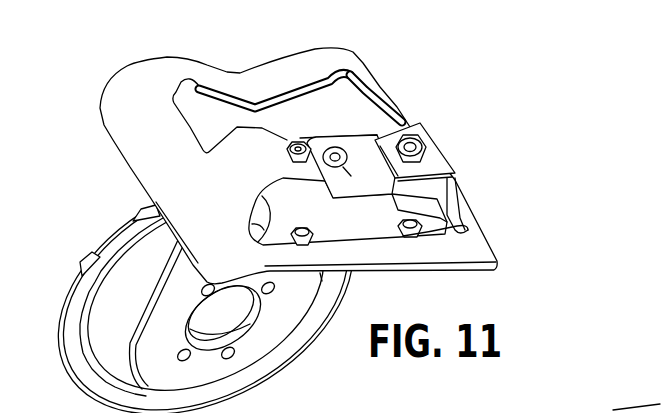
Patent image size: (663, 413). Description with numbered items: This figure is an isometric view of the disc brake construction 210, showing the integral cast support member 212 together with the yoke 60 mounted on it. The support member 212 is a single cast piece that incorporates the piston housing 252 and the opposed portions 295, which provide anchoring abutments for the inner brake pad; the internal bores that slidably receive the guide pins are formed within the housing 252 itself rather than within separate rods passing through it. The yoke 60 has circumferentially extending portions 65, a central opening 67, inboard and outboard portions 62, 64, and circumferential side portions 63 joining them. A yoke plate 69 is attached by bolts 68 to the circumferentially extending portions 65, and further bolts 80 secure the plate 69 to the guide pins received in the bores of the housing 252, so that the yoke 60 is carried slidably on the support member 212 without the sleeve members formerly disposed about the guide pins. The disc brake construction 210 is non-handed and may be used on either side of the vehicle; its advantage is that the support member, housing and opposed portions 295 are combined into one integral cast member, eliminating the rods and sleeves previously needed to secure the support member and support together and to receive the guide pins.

The yoke 60 is at (457, 187).
The inboard portion 62 is at (386, 260).
The circumferential side portion 63 is at (376, 78).
The outboard portion 64 is at (291, 94).
The circumferentially extending portion 65 is at (438, 160).
The central opening 67 is at (397, 112).
The bolt 68 is at (426, 130).
The yoke plate 69 is at (368, 231).
The bolt 80 is at (468, 229).
The disc brake construction 210 is at (540, 184).
The support member 212 is at (72, 297).
The piston housing 252 is at (355, 142).
The opposed portion 295 is at (600, 410).